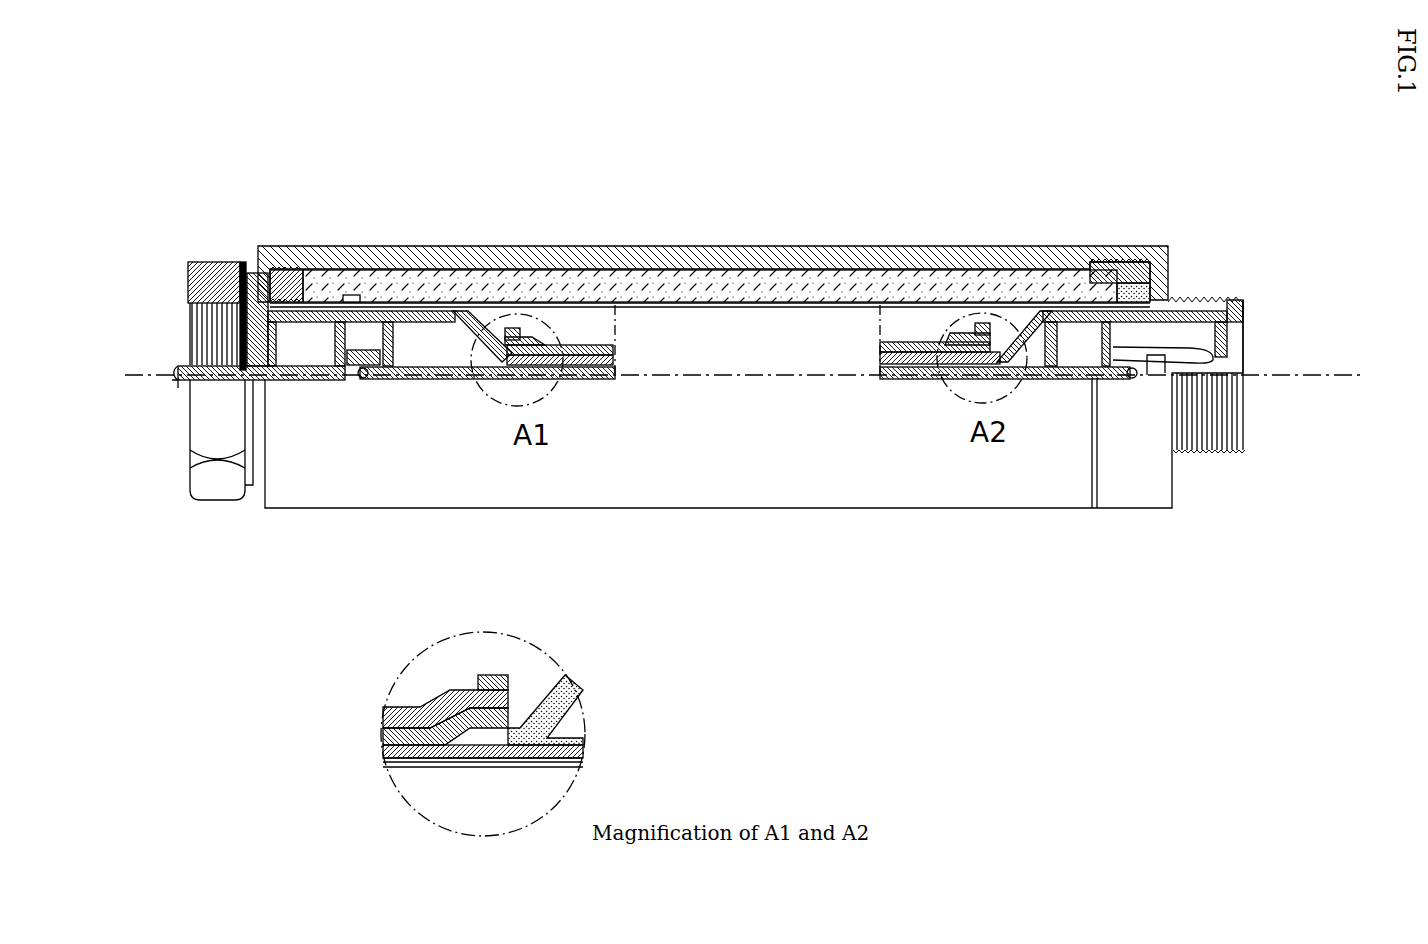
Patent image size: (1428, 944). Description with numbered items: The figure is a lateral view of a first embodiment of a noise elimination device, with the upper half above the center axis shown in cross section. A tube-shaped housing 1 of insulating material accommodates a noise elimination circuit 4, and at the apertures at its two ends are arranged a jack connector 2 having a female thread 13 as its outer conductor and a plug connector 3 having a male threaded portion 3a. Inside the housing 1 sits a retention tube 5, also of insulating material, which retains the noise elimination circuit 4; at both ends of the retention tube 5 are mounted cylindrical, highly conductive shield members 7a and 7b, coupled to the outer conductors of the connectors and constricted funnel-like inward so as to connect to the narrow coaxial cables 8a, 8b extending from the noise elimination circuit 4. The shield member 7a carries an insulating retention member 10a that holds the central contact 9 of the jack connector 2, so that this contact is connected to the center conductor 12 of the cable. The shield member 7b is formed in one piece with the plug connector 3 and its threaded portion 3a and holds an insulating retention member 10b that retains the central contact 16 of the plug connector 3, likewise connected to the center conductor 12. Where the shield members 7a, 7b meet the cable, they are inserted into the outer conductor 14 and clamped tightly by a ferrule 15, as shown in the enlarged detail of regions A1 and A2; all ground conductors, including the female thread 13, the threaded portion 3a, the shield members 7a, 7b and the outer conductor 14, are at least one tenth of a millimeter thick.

The housing 1 is at (632, 247).
The jack connector 2 is at (175, 368).
The plug connector 3 is at (1240, 325).
The threaded portion 3a is at (1197, 302).
The noise elimination circuit 4 is at (743, 365).
The retention tube 5 is at (787, 290).
The shield member 7a is at (490, 330).
The shield member 7b is at (1005, 330).
The coaxial cable 8a is at (580, 343).
The coaxial cable 8b is at (930, 340).
The central contact 9 is at (188, 370).
The retention member 10a is at (372, 250).
The retention member 10b is at (1090, 262).
The center conductor 12 is at (362, 380).
The female thread 13 is at (190, 262).
The outer conductor 14 is at (613, 362).
The ferrule 15 is at (477, 672).
The central contact 16 is at (1183, 348).